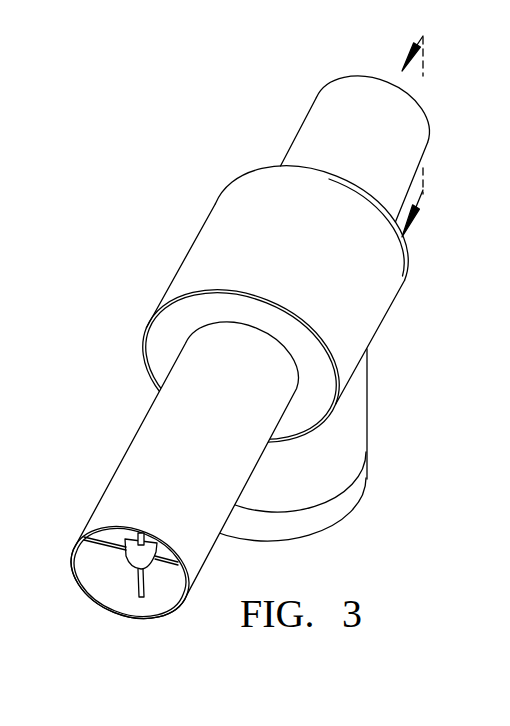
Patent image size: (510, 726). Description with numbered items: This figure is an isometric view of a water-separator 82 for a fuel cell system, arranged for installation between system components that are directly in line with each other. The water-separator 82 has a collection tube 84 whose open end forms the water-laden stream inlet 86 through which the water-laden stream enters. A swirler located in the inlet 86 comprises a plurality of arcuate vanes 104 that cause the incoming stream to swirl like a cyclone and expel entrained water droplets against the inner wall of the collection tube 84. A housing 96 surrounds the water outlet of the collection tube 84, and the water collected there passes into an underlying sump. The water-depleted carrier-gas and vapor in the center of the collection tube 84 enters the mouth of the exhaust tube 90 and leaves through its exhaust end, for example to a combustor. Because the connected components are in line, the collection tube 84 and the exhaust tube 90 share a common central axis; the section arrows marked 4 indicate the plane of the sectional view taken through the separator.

The water-separator 82 is at (271, 333).
The exhaust tube 90 is at (313, 132).
The housing 96 is at (190, 280).
The collection tube 84 is at (132, 487).
The water-laden stream inlet 86 is at (73, 553).
The arcuate vanes 104 is at (112, 540).
The section line 4- 4 is at (419, 126).